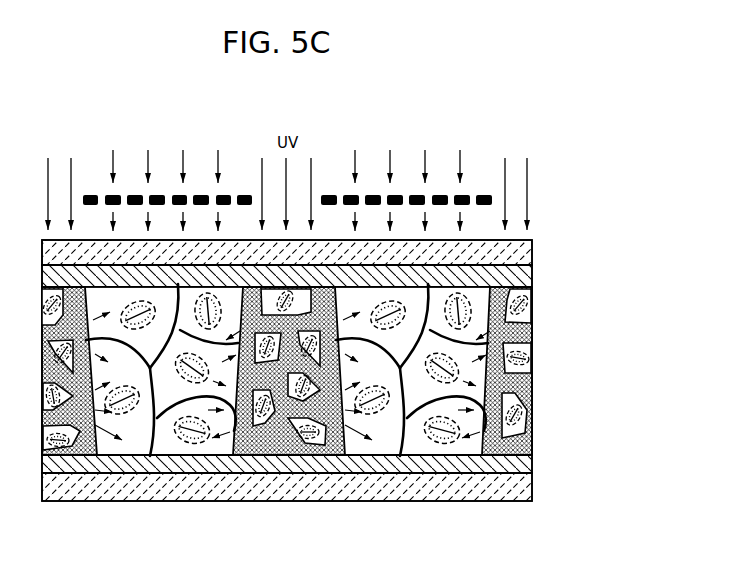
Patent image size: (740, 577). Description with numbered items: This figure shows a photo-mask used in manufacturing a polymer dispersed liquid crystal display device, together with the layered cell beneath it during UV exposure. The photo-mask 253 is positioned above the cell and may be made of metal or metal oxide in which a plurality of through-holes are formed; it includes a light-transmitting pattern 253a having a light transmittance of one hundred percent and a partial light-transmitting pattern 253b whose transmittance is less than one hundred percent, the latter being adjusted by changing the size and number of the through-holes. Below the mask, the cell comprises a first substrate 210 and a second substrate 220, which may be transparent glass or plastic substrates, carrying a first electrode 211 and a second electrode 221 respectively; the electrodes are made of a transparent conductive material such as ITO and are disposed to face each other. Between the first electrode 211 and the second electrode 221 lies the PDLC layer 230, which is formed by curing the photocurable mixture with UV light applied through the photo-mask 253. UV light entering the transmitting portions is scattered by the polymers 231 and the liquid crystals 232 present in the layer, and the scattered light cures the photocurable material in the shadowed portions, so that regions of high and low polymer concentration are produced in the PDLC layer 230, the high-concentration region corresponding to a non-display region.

The first substrate 210 is at (533, 486).
The first electrode 211 is at (533, 461).
The second substrate 220 is at (533, 245).
The second electrode 221 is at (533, 269).
The PDLC layer 230 is at (312, 411).
The polymers 231 is at (406, 444).
The liquid crystals 232 is at (444, 446).
The photo-mask 253 is at (287, 145).
The light-transmitting pattern 253a is at (322, 195).
The partial light-transmitting pattern 253b is at (411, 163).